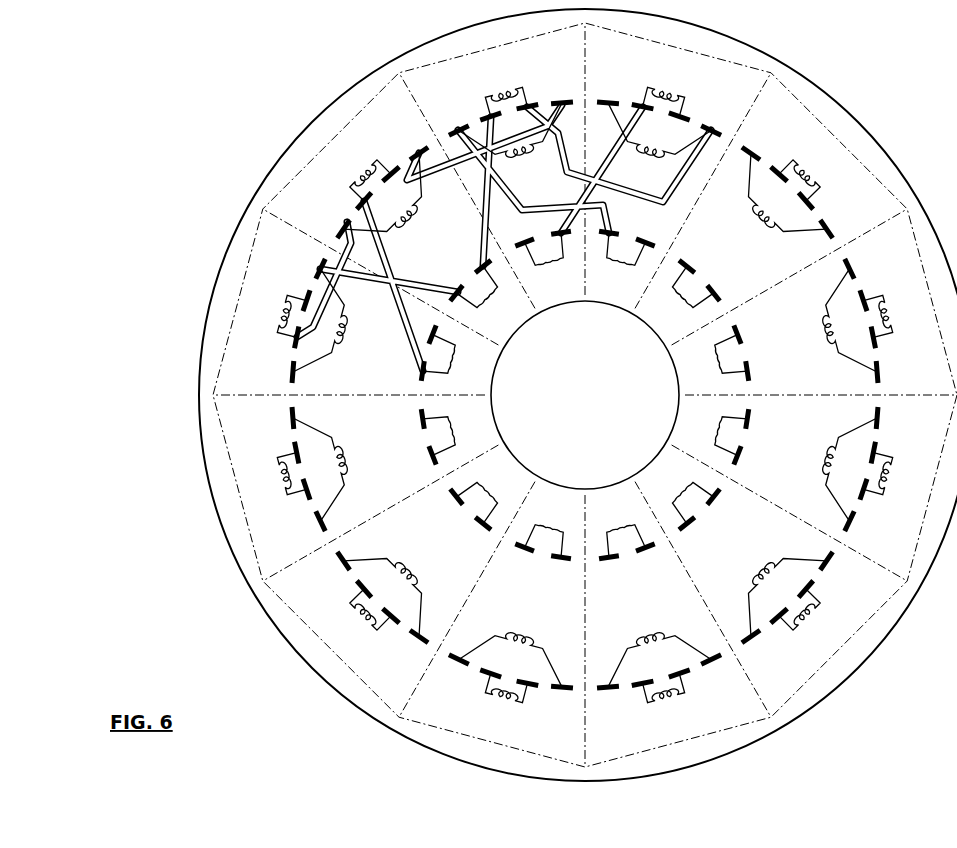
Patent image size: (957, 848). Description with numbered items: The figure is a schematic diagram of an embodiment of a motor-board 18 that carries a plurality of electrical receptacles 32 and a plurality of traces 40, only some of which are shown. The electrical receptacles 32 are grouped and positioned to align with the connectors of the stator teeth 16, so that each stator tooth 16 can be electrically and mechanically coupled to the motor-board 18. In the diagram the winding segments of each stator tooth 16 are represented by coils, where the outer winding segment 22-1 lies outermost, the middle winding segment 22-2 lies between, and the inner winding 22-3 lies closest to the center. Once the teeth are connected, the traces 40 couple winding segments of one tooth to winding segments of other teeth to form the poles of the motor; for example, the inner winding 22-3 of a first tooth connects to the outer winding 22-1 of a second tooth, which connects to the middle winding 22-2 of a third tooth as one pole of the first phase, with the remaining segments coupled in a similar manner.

The stator tooth 16 is at (330, 136).
The motor-board 18 is at (207, 497).
The electrical receptacles 32 is at (452, 124).
The traces 40 is at (343, 252).
The outer winding segment 22-1 is at (585, 394).
The middle winding segment 22-2 is at (585, 395).
The inner winding 22-3 is at (585, 395).